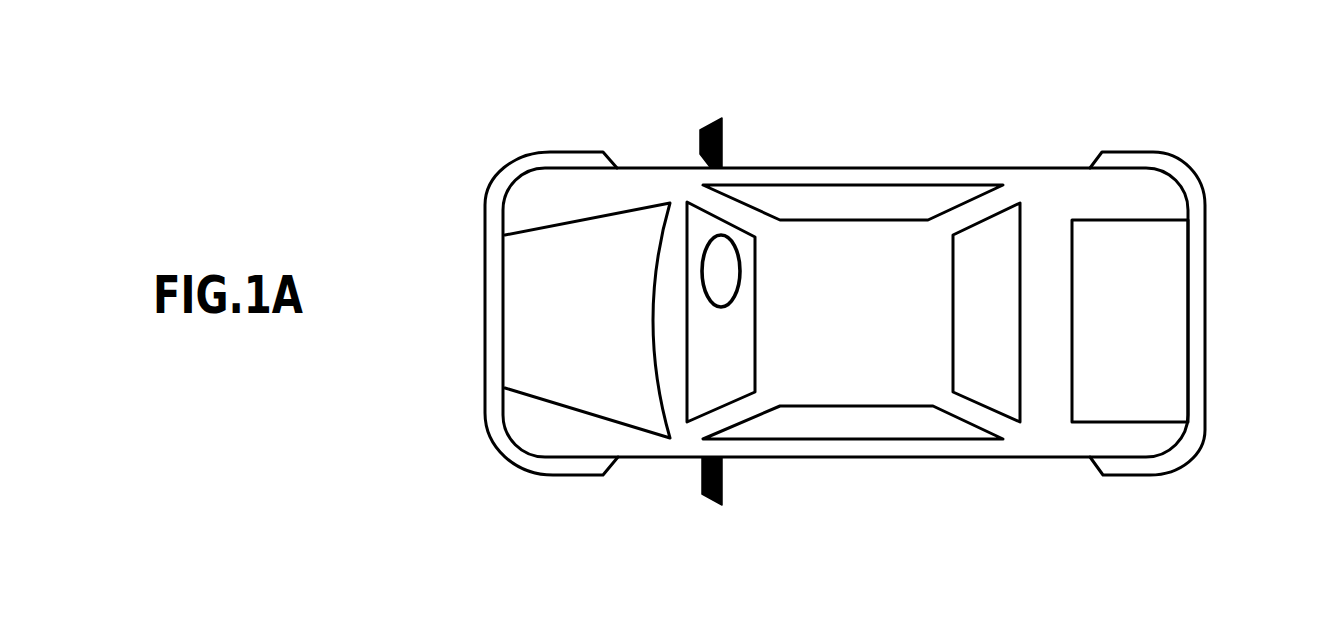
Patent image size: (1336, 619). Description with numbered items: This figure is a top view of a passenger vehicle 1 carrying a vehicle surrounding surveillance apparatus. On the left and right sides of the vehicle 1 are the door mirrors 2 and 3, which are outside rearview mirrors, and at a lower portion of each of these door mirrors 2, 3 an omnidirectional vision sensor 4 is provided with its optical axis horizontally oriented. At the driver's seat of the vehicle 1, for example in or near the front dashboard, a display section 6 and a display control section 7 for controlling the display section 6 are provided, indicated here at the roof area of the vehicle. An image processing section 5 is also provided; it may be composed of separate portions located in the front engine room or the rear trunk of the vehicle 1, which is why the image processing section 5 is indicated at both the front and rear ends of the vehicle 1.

The vehicle 1 is at (845, 328).
The door mirror 2 is at (699, 494).
The door mirror 3 is at (699, 131).
The omnidirectional vision sensor 4 is at (699, 324).
The image processing section 5 is at (522, 292).
The display section 6 is at (853, 277).
The display control section 7 is at (797, 253).